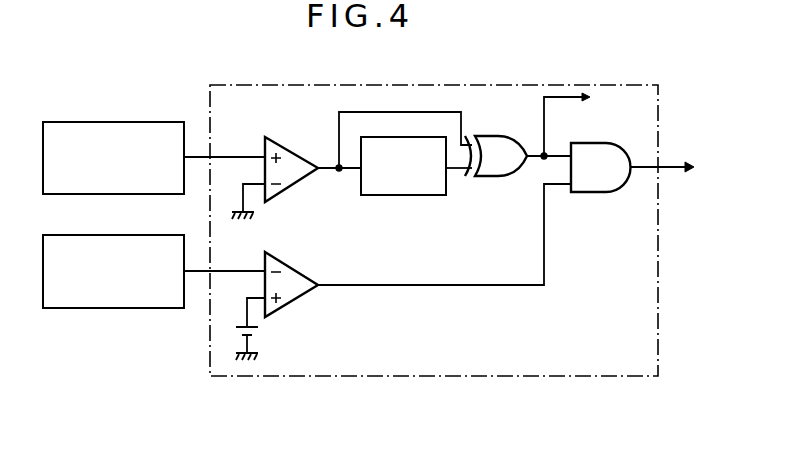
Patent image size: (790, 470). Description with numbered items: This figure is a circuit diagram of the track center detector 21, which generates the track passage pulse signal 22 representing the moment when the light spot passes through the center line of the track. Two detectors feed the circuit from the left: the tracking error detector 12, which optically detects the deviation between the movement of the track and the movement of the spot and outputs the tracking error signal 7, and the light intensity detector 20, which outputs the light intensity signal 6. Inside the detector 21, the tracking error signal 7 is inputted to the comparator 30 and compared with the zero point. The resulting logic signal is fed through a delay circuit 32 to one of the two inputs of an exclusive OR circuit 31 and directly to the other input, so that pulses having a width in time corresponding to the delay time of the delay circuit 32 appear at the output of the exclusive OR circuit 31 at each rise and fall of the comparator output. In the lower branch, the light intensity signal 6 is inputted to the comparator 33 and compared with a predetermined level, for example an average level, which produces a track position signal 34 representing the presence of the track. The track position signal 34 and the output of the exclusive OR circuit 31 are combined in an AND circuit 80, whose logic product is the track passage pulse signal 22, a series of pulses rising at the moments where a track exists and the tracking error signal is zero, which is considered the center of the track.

The tracking error detector 12 is at (157, 122).
The tracking error signal 7 is at (236, 157).
The comparator 30 is at (300, 118).
The exclusive OR circuit 31 is at (505, 135).
The delay circuit 32 is at (405, 195).
The AND circuit 80 is at (618, 143).
The track passage pulse signal 22 is at (668, 166).
The light intensity signal 6 is at (234, 271).
The comparator 33 is at (292, 242).
The track position signal 34 is at (447, 285).
The light intensity detector 20 is at (150, 308).
The track center detector 21 is at (578, 378).